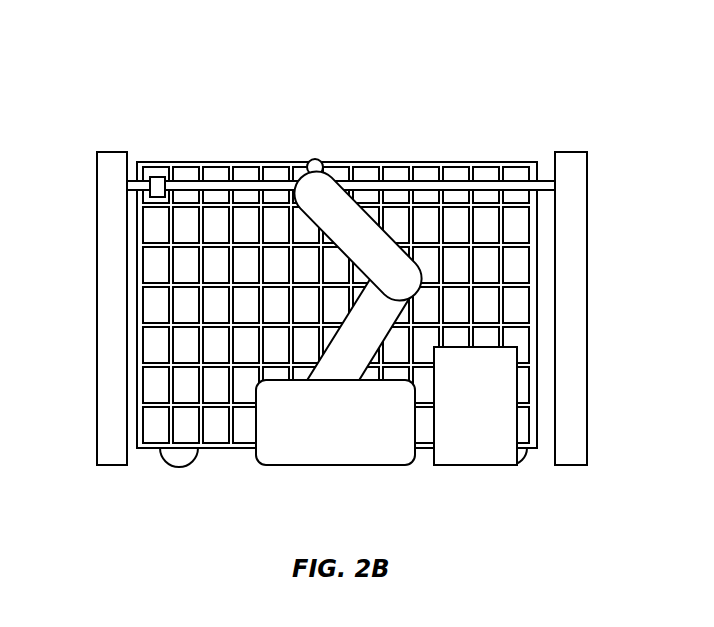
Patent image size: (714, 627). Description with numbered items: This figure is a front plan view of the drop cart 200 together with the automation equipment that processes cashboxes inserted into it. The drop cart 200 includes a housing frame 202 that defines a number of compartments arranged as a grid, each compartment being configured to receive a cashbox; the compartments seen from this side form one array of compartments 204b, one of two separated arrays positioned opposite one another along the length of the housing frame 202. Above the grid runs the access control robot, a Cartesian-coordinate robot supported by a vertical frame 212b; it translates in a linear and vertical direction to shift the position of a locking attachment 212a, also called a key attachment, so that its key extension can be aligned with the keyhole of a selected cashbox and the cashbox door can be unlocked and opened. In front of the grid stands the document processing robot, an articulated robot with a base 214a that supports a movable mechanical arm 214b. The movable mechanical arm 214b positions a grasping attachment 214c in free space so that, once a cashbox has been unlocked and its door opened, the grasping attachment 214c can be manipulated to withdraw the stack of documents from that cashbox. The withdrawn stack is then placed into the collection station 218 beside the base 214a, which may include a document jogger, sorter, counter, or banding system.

The drop cart 200 is at (87, 51).
The housing frame 202 is at (520, 162).
The array of compartments 204b is at (595, 165).
The locking attachment 212a is at (157, 175).
The vertical frame 212b is at (246, 178).
The base 214a is at (303, 466).
The movable mechanical arm 214b is at (373, 208).
The grasping attachment 214c is at (313, 158).
The collection station 218 is at (482, 466).